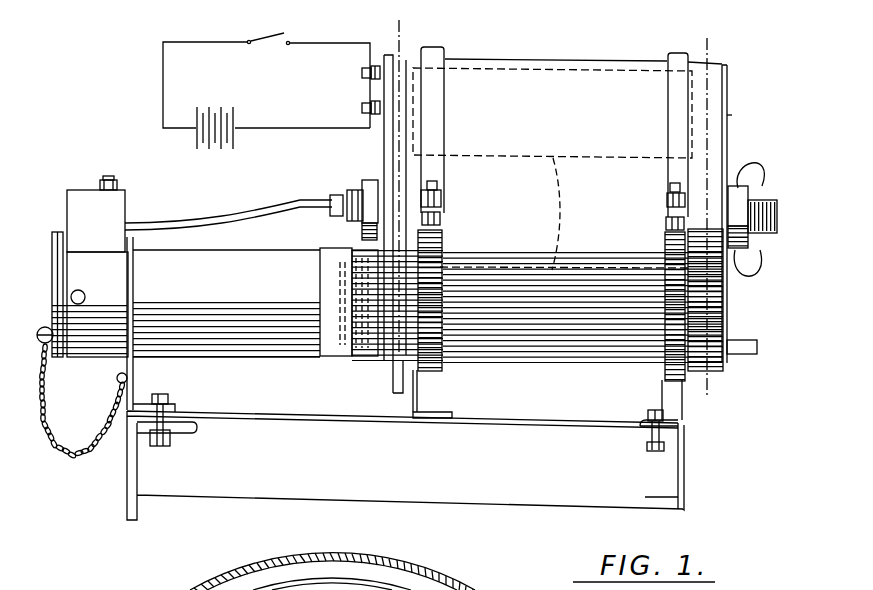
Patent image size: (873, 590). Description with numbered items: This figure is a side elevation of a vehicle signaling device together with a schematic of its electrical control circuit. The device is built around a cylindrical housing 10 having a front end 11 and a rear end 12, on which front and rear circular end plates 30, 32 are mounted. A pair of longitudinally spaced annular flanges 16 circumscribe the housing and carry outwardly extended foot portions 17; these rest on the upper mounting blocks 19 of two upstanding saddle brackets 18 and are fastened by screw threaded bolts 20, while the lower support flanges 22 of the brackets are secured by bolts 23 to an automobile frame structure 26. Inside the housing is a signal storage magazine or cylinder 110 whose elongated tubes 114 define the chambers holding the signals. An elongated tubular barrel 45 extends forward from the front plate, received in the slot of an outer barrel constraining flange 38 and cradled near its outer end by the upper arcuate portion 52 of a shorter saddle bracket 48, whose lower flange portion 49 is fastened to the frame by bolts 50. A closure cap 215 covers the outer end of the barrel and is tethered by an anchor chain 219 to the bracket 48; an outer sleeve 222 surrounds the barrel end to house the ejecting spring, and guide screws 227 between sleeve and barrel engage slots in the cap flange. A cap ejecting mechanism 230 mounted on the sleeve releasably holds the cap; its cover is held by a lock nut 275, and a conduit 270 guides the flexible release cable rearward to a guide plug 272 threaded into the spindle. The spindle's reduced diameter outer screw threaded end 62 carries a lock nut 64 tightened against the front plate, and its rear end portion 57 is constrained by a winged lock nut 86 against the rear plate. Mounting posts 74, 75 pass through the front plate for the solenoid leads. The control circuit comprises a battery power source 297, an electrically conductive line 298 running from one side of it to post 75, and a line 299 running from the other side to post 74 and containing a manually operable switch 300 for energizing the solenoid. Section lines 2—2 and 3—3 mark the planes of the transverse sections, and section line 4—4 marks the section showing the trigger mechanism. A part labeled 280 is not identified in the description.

The section line 2— 2 is at (440, 23).
The section line 3— 3 is at (740, 38).
The section line 4— 4 is at (403, 23).
The cylindrical housing 10 is at (585, 55).
The front end 11 is at (383, 56).
The rear end 12 is at (727, 64).
The annular flanges 16 is at (441, 50).
The foot portions 17 is at (441, 221).
The saddle brackets 18 is at (433, 288).
The upper mounting blocks 19 is at (442, 203).
The screw threaded bolts 20 is at (437, 188).
The lower support flanges 22 is at (449, 413).
The bolts 23 is at (657, 410).
The automobile frame structure 26 is at (520, 428).
The front circular end plate 30 is at (383, 150).
The rear circular end plate 32 is at (732, 115).
The outer barrel constraining flange 38 is at (332, 358).
The elongated tubular barrel 45 is at (234, 263).
The saddle bracket 48 is at (135, 358).
The lower flange portion 49 is at (178, 408).
The bolts 50 is at (170, 402).
The upper arcuate portion 52 is at (128, 355).
The rear end portion 57 is at (766, 200).
The reduced diameter outer screw threaded end 62 is at (350, 190).
The lock nut 64 is at (365, 180).
The mounting post 74 is at (363, 72).
The mounting post 75 is at (363, 107).
The winged lock nut 86 is at (750, 244).
The signal storage magazine or cylinder 110 is at (523, 65).
The elongated tubes 114 is at (318, 580).
The closure cap 215 is at (52, 252).
The anchor chain 219 is at (82, 456).
The outer sleeve 222 is at (122, 296).
The guide screws 227 is at (84, 291).
The cap ejecting mechanism 230 is at (129, 194).
The conduit 270 is at (204, 222).
The guide plug 272 is at (330, 203).
The lock nut 275 is at (100, 182).
The drum shell 280 is at (361, 579).
The power source 297 is at (240, 108).
The electrically conductive line 298 is at (328, 129).
The electrically conductive line 299 is at (221, 42).
The manually operable switch 300 is at (258, 36).